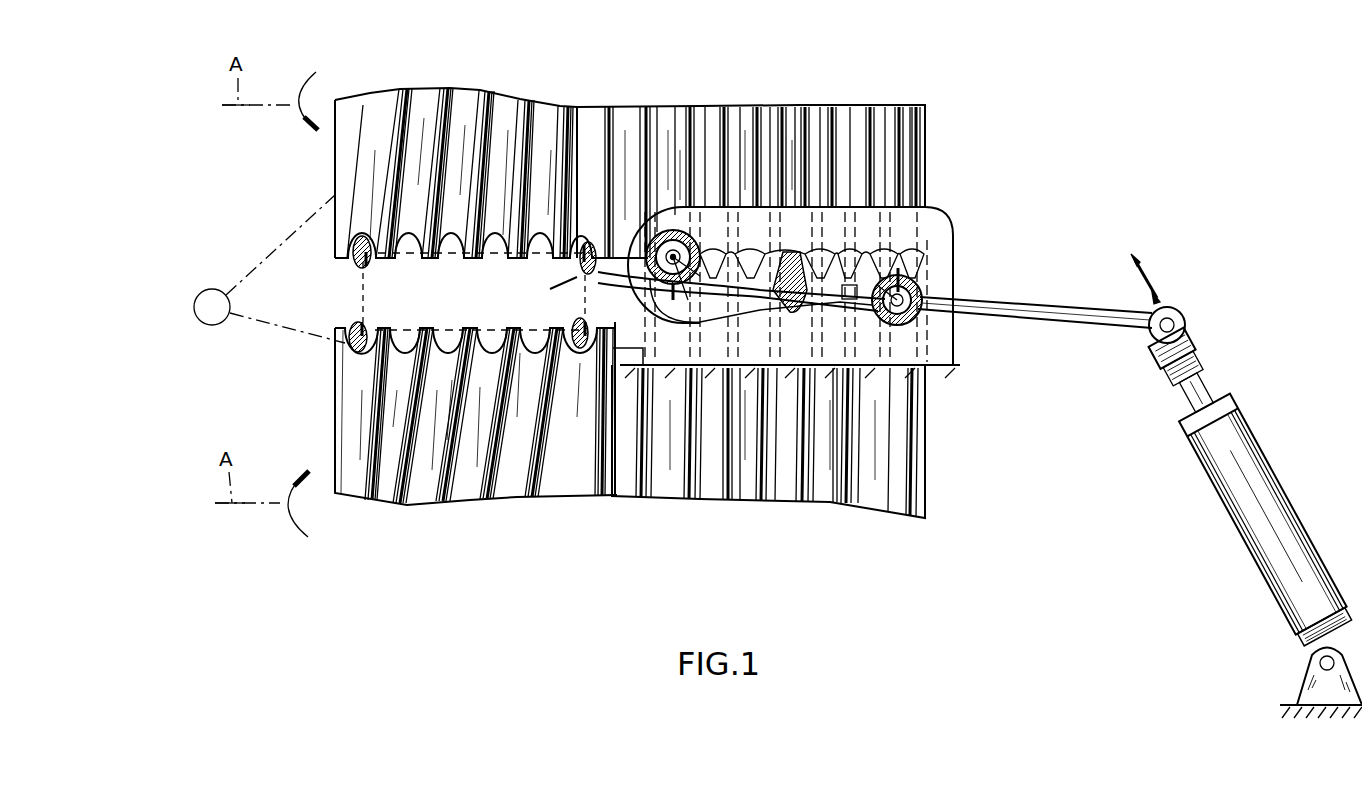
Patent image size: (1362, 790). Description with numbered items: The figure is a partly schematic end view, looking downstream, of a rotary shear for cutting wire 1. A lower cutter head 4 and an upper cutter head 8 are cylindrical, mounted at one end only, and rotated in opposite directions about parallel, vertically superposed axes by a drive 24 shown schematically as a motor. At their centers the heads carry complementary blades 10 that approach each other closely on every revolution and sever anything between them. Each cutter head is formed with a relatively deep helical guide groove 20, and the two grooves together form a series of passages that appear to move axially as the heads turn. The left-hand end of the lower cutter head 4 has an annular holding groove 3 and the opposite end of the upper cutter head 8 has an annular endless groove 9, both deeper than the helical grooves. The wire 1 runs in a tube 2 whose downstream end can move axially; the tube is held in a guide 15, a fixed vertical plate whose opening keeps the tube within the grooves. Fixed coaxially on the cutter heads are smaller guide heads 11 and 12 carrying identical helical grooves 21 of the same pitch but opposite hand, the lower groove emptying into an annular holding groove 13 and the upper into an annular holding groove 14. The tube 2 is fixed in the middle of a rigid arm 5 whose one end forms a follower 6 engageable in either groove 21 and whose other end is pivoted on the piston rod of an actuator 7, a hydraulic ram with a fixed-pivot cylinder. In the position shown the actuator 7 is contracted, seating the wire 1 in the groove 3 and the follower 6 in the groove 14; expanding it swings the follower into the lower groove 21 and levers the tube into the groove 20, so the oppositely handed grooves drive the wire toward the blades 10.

The wire 1 is at (905, 293).
The tube 2 is at (930, 255).
The holding groove 3 is at (918, 490).
The lower cutter head 4 is at (836, 500).
The arm 5 is at (1065, 312).
The follower 6 is at (562, 282).
The actuator 7 is at (1250, 420).
The upper cutter head 8 is at (852, 128).
The annular endless groove 9 is at (679, 128).
The blades 10 is at (790, 255).
The guide head 11 is at (428, 505).
The guide head 12 is at (472, 88).
The annular holding groove 13 is at (360, 418).
The annular holding groove 14 is at (590, 130).
The guide 15 is at (940, 232).
The helical guide groove 20 is at (898, 130).
The helical groove 21 is at (513, 128).
The drive 24 is at (211, 288).